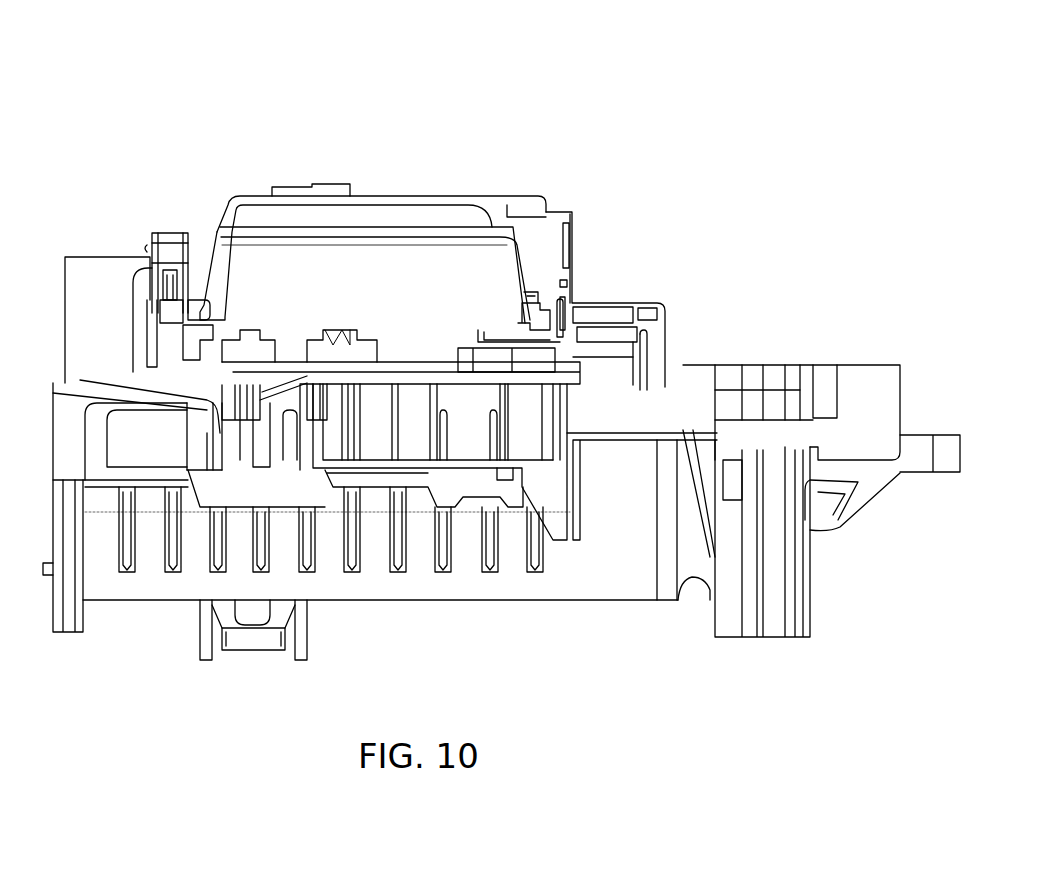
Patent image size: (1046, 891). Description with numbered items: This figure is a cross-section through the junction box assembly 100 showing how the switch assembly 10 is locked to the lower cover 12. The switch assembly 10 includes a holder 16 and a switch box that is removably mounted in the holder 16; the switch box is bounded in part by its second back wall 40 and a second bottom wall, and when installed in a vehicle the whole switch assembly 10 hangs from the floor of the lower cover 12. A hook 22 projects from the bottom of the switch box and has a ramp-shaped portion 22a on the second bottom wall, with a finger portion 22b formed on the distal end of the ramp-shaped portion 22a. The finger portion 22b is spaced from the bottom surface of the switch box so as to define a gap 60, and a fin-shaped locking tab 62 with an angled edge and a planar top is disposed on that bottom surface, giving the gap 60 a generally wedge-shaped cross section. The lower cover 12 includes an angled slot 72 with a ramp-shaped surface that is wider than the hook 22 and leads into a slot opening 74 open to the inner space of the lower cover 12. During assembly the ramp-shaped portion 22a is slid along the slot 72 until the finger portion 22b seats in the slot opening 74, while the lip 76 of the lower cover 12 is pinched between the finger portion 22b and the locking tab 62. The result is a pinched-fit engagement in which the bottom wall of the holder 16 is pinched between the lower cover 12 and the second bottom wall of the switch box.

The junction box assembly 100 is at (668, 60).
The switch assembly 10 is at (225, 216).
The lower cover 12 is at (205, 240).
The holder 16 is at (560, 195).
The hook 22 is at (233, 372).
The ramp-shaped portion 22a is at (222, 350).
The finger portion 22b is at (262, 395).
The second back wall 40 is at (560, 247).
The gap 60 is at (326, 360).
The locking tab 62 is at (298, 368).
The slot 72 is at (222, 387).
The slot opening 74 is at (253, 403).
The lip 76 is at (305, 505).